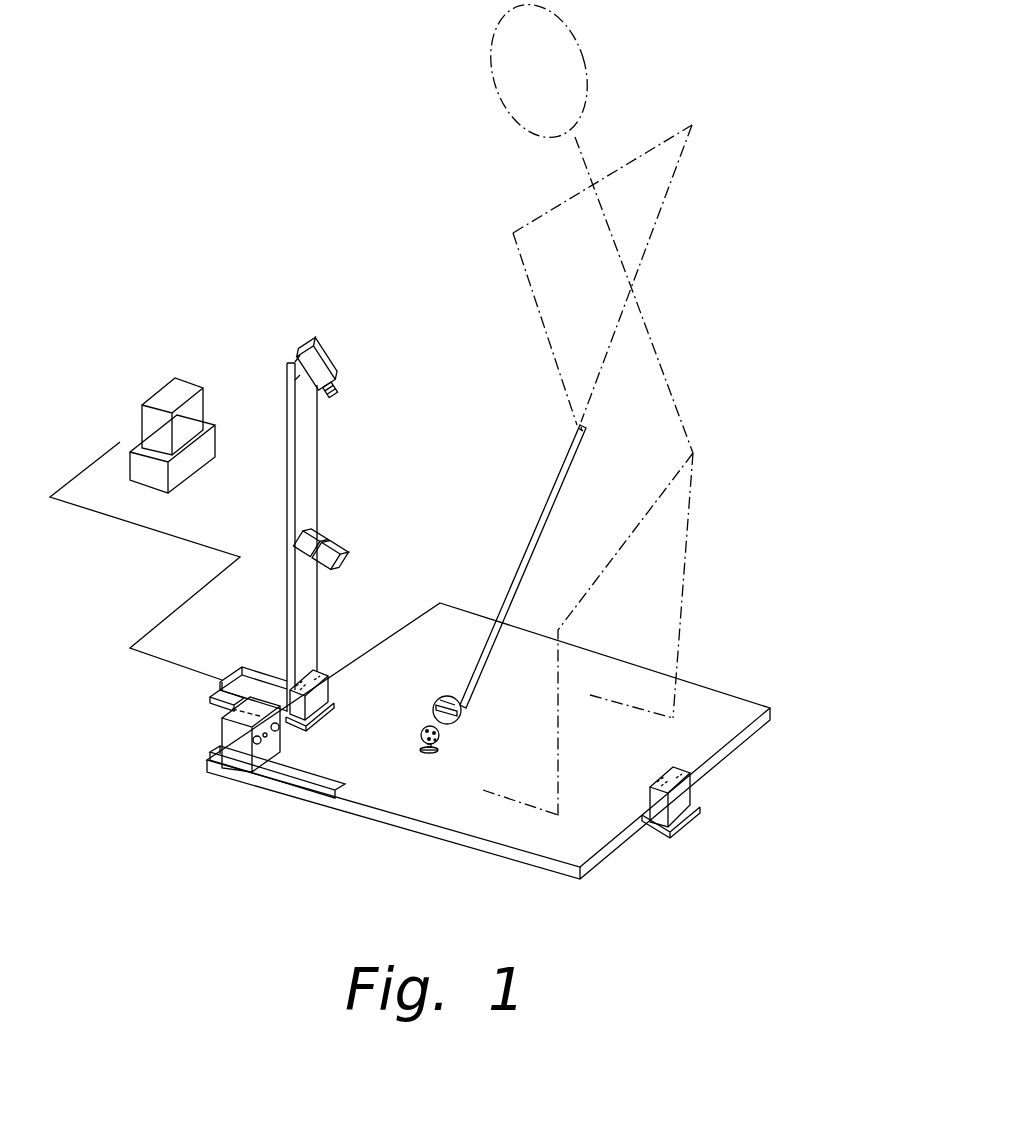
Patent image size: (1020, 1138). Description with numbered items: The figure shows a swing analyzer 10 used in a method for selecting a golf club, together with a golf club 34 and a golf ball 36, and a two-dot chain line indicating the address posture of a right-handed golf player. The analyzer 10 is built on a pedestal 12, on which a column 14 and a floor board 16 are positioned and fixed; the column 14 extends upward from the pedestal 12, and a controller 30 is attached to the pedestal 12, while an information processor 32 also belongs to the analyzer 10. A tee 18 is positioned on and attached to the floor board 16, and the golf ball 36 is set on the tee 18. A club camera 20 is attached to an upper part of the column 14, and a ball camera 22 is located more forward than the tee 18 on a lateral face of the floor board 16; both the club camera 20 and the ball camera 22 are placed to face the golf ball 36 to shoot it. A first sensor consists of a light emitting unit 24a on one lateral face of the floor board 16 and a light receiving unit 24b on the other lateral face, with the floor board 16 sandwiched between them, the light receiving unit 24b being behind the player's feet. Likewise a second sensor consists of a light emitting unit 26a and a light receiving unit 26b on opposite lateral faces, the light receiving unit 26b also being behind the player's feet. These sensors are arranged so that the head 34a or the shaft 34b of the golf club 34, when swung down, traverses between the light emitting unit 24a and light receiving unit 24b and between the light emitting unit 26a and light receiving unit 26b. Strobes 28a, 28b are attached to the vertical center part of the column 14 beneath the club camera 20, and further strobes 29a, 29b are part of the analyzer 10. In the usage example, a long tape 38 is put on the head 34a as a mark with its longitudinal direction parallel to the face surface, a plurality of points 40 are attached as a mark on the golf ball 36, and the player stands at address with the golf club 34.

The analyzer 10 is at (182, 224).
The pedestal 12 is at (218, 692).
The column 14 is at (302, 444).
The floor board 16 is at (268, 778).
The tee 18 is at (415, 755).
The club camera 20 is at (328, 365).
The ball camera 22 is at (220, 735).
The light emitting unit 24a is at (318, 675).
The light receiving unit 24b is at (678, 774).
The light emitting unit 26a is at (306, 690).
The light receiving unit 26b is at (674, 793).
The strobe 28a is at (326, 540).
The strobe 28b is at (337, 562).
The strobe 29a is at (221, 717).
The strobe 29b is at (210, 772).
The controller 30 is at (233, 672).
The information processor 32 is at (188, 465).
The golf club 34 is at (535, 518).
The head 34a is at (447, 694).
The shaft 34b is at (553, 483).
The golf ball 36 is at (440, 752).
The tape 38 is at (433, 702).
The points 40 is at (418, 733).